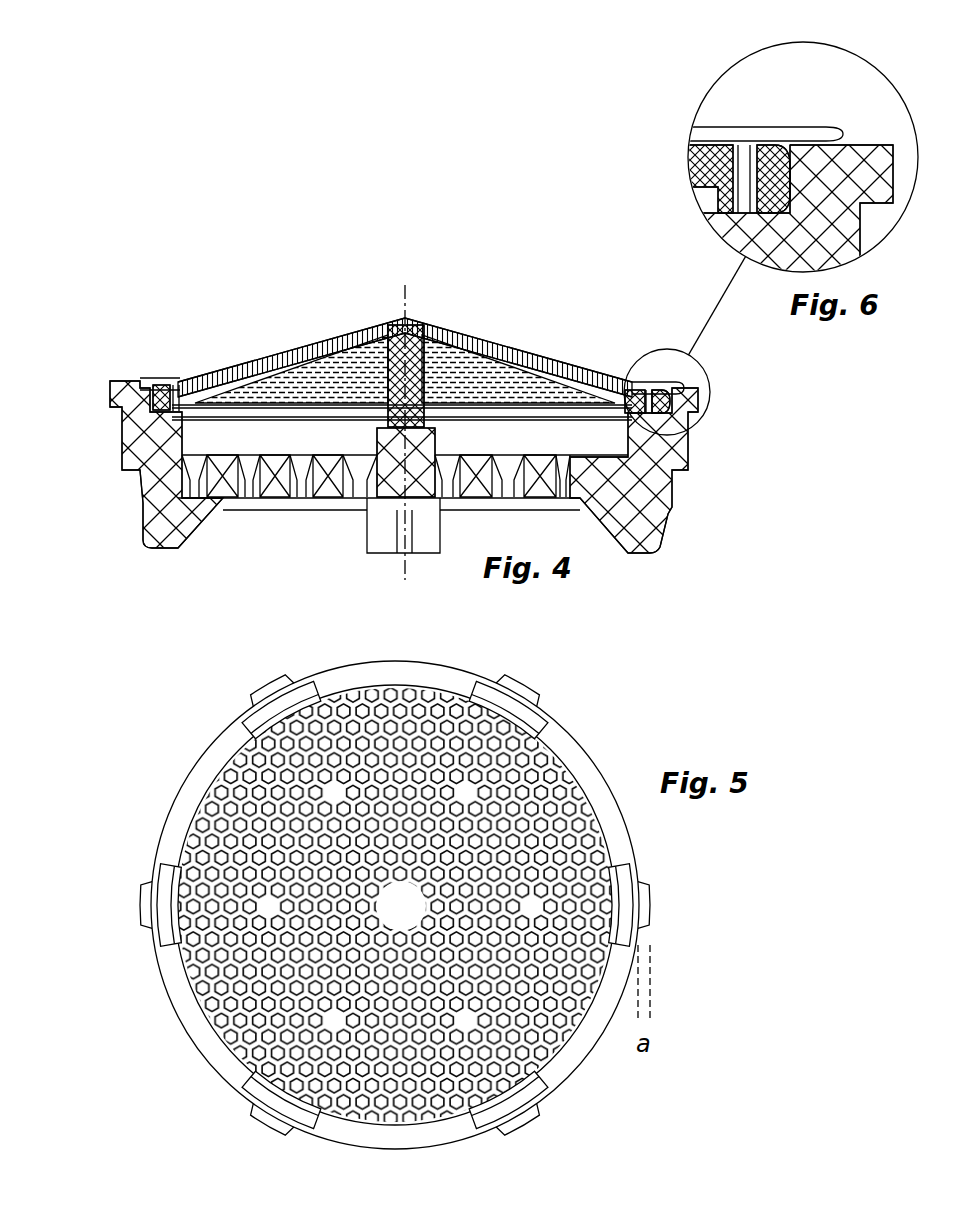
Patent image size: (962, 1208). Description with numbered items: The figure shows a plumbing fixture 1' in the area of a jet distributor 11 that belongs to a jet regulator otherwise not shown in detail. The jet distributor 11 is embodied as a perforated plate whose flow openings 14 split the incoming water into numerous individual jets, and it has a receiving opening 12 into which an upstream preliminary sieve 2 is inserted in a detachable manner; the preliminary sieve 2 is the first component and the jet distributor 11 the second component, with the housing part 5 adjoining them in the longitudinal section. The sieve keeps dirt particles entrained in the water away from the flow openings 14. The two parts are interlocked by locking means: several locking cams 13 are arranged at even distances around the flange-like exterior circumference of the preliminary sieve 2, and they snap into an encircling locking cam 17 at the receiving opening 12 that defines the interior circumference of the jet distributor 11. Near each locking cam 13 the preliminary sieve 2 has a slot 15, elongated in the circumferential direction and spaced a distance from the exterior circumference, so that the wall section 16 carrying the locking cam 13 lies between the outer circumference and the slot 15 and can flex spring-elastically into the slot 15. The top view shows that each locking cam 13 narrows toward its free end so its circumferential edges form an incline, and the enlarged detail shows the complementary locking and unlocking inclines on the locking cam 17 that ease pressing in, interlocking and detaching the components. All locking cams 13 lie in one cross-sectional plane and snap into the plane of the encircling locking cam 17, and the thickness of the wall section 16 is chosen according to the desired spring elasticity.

In FIG. 4, the plumbing fixture 1' is at (394, 412).
In FIG. 4, the preliminary sieve 2 is at (468, 351).
In FIG. 6, the preliminary sieve 2 is at (700, 178).
In FIG. 5, the preliminary sieve 2 is at (582, 762).
In FIG. 4, the housing upper part 5 is at (662, 422).
In FIG. 4, the jet distributor 11 is at (148, 462).
In FIG. 6, the jet distributor 11 is at (822, 241).
In FIG. 4, the receiving opening 12 is at (213, 440).
In FIG. 6, the locking cam 13 is at (793, 183).
In FIG. 5, the locking cam 13 is at (272, 696).
In FIG. 4, the flow opening 14 is at (345, 476).
In FIG. 4, the slot 15 is at (170, 420).
In FIG. 5, the slot 15 is at (313, 696).
In FIG. 5, the wall section 16 is at (258, 718).
In FIG. 4, the encircling locking cam 17 is at (656, 400).
In FIG. 6, the encircling locking cam 17 is at (772, 188).